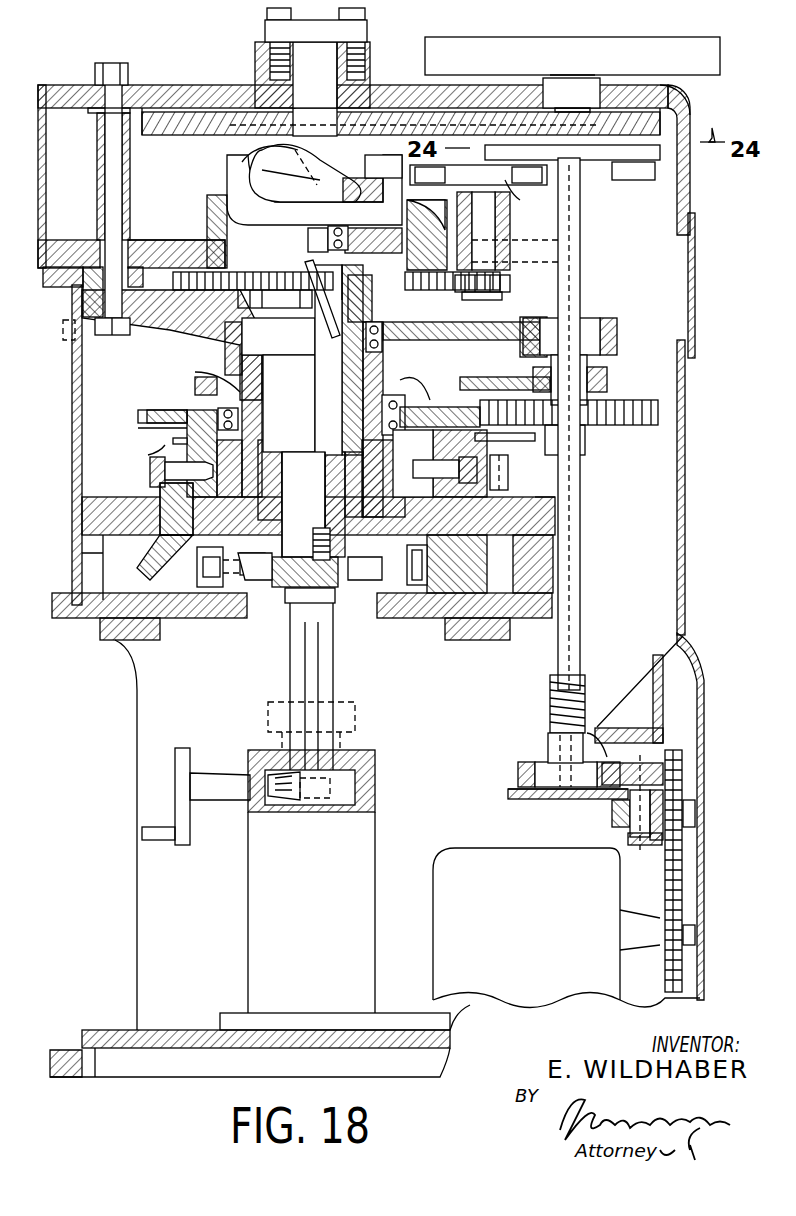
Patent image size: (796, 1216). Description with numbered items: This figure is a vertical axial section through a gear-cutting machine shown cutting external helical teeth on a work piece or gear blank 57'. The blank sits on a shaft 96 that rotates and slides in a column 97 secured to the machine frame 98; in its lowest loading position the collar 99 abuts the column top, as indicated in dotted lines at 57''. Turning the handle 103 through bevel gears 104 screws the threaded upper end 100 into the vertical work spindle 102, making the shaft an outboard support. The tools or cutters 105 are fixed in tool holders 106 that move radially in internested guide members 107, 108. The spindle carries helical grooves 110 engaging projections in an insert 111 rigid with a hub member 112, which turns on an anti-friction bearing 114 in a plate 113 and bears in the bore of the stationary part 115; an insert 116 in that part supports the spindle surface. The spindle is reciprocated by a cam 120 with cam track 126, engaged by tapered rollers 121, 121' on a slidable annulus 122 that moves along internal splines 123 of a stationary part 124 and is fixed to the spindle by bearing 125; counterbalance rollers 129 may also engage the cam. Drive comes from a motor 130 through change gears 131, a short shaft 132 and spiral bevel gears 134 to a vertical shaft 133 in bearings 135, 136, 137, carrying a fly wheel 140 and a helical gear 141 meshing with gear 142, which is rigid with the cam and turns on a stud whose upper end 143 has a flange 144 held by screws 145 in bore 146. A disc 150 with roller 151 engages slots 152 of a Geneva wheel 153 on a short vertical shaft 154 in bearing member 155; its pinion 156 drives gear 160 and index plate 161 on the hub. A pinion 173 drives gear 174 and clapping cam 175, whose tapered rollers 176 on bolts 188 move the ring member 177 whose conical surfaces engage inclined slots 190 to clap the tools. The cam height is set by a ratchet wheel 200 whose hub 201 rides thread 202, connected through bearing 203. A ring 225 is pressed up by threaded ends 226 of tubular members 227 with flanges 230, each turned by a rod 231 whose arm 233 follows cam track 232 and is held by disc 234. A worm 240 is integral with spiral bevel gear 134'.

The machine frame 98 is at (686, 382).
The motor 130 is at (512, 970).
The column 97 is at (362, 836).
The bevel gears 104 is at (290, 805).
The handle 103 is at (163, 840).
The shaft 96 is at (322, 672).
The dotted-line position of the work piece 57'' is at (336, 726).
The collar 99 is at (338, 600).
The tool holder 106 is at (215, 615).
The guide member 107 is at (410, 612).
The ring 225 is at (110, 638).
The threaded ends 226 is at (495, 640).
The stationary part 115 is at (235, 385).
The hub member 112 is at (340, 405).
The helical grooves 110 is at (325, 325).
The threaded upper end 100 is at (335, 505).
The work spindle 102 is at (332, 450).
The insert 116 is at (318, 525).
The insert 111 is at (350, 285).
The antifriction bearing 203 is at (380, 420).
The anti-friction bearing 114 is at (384, 340).
The anti-friction bearing 125 is at (310, 240).
The disc 234 is at (215, 412).
The gear 160 is at (173, 282).
The index plate 161 is at (430, 292).
The rollers 129 is at (300, 118).
The helical gear 142 is at (205, 118).
The upper end of stud 143 is at (270, 58).
The cylindrical bore 146 is at (365, 85).
The screws 145 is at (267, 15).
The flange 144 is at (367, 33).
The fly wheel 140 is at (705, 60).
The bearing 137 is at (575, 90).
The helical gear 141 is at (672, 103).
The disc 150 is at (660, 153).
The circular projection or roller 151 is at (648, 172).
The slots 152 is at (535, 173).
The Geneva wheel 153 is at (530, 201).
The short vertical shaft 154 is at (470, 222).
The bearing member 155 is at (512, 230).
The pinion 156 is at (510, 285).
The cam track 126 is at (290, 168).
The tapered roller 121 is at (325, 170).
The cam 120 is at (252, 146).
The tapered roller 121' is at (253, 170).
The slidable annulus 122 is at (220, 215).
The internal splines 123 is at (215, 228).
The stationary part 124 is at (78, 250).
The plate 113 is at (460, 332).
The hub 201 is at (420, 380).
The bearing 136 is at (600, 330).
The pinion 173 is at (655, 415).
The vertical shaft 133 is at (575, 465).
The tubular members 227 is at (510, 480).
The flange 230 is at (520, 495).
The rod 231 is at (523, 471).
The arm 233 is at (480, 440).
The guide member 108 is at (530, 575).
The gear 174 is at (140, 415).
The cam track 232 is at (142, 426).
The clapping cam 175 is at (180, 444).
The tapered rollers 176 is at (175, 488).
The bolts 188 is at (148, 462).
The ratchet wheel 200 is at (195, 380).
The external thread 202 is at (195, 372).
The ring member 177 is at (140, 568).
The inclined slots 190 is at (150, 570).
The tools or cutters 105 is at (258, 600).
The work piece or gear blank 57' is at (263, 590).
The worm 240 is at (550, 700).
The bearing 135 is at (525, 770).
The spiral bevel gears 134 is at (568, 809).
The spiral bevel gear 134' is at (542, 801).
The short shaft 132 is at (650, 803).
The change gears 131 is at (678, 890).